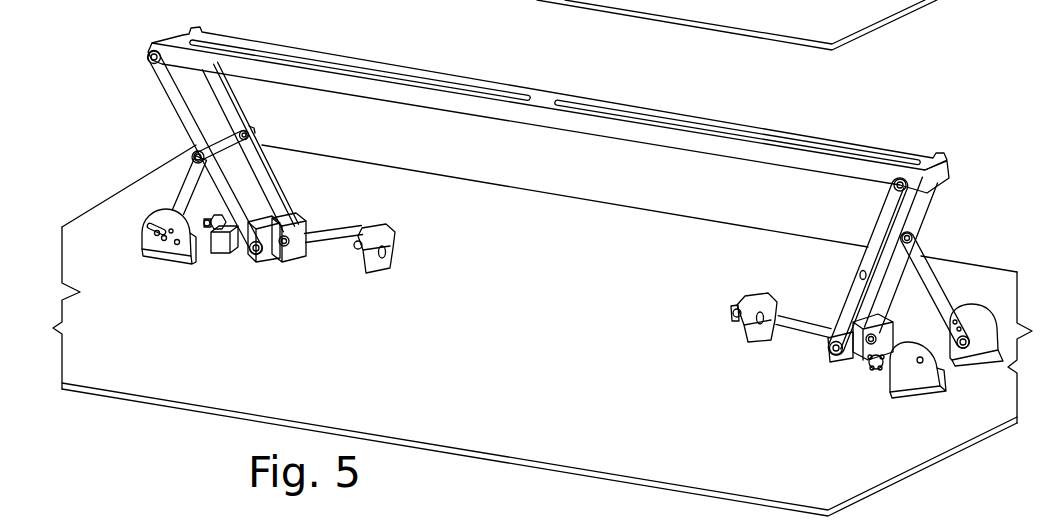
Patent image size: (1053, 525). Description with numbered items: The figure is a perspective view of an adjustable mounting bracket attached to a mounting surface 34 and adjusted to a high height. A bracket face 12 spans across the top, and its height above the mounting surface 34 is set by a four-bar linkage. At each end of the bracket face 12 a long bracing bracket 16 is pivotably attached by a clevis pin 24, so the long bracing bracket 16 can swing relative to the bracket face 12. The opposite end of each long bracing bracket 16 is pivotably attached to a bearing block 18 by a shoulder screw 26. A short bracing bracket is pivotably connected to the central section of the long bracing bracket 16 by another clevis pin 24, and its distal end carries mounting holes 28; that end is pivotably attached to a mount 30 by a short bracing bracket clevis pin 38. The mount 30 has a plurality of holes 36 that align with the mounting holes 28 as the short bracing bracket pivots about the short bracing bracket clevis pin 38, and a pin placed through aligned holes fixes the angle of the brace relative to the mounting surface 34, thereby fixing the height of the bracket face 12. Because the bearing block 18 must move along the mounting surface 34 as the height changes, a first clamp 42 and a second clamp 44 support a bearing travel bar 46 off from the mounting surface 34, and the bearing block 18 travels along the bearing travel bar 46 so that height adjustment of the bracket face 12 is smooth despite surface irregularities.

The bracket face 12 is at (778, 134).
The long bracing bracket 16 is at (274, 163).
The bearing block 18 is at (266, 263).
The clevis pin 24 is at (153, 64).
The shoulder screw 26 is at (833, 359).
The mounting holes 28 is at (960, 363).
The mount 30 is at (158, 263).
The mounting surface 34 is at (587, 412).
The holes 36 is at (897, 394).
The short bracing bracket clevis pin 38 is at (143, 239).
The first clamp 42 is at (221, 257).
The second clamp 44 is at (396, 255).
The bearing travel bar 46 is at (330, 253).